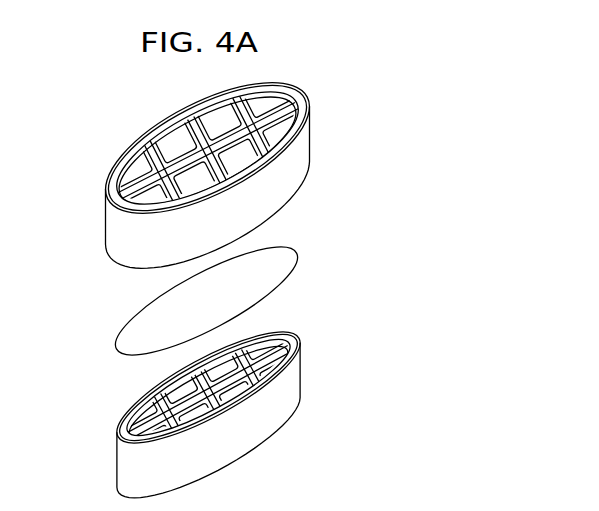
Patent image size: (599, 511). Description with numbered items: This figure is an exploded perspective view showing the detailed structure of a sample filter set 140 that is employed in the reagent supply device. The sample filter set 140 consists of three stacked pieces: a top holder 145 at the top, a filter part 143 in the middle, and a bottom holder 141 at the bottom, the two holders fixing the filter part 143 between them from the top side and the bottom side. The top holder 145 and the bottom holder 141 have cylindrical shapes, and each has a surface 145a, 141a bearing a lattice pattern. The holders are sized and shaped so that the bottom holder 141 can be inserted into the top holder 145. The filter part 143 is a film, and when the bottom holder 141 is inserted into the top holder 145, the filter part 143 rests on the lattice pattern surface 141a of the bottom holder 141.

The sample filter set 140 is at (380, 118).
The bottom holder 141 is at (287, 387).
The lattice pattern surface of the bottom holder 141a is at (142, 397).
The filter part 143 is at (287, 260).
The top holder 145 is at (302, 167).
The lattice pattern surface of the top holder 145a is at (137, 152).